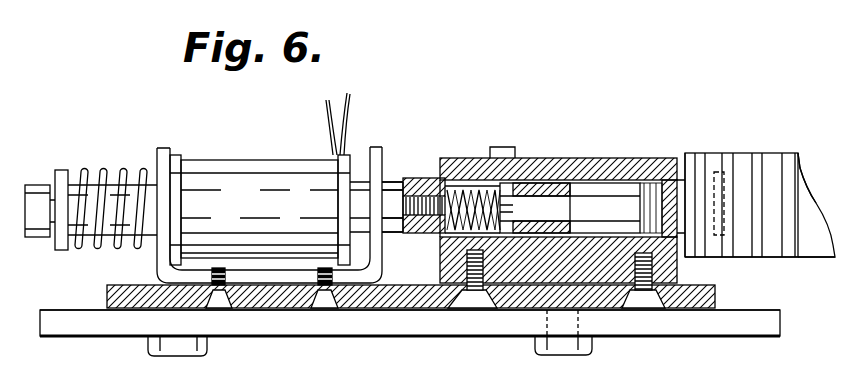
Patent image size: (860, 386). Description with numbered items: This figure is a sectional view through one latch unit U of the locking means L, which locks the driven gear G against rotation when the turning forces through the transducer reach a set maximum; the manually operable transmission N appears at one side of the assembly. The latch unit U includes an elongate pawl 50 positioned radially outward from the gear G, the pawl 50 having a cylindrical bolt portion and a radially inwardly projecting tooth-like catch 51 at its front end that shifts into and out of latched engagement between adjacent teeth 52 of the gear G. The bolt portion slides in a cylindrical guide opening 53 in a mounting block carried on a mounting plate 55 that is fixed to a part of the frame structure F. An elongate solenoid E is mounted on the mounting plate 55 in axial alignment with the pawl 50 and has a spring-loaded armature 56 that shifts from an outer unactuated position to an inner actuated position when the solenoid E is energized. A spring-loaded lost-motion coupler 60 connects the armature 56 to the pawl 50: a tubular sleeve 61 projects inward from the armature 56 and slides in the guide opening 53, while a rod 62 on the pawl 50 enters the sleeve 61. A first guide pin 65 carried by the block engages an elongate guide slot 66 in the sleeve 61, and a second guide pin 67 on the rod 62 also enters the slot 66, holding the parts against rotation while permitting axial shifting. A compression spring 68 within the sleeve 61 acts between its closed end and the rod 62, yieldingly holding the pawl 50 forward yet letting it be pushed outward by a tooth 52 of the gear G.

The pawl 50 is at (655, 158).
The catch 51 is at (697, 153).
The teeth 52 is at (803, 160).
The guide opening 53 is at (632, 158).
The mounting plate 55 is at (292, 310).
The armature 56 is at (396, 178).
The lost-motion coupler 60 is at (418, 183).
The tubular sleeve 61 is at (517, 288).
The rod 62 is at (580, 160).
The first guide pin 65 is at (525, 158).
The guide slot 66 is at (458, 161).
The second guide pin 67 is at (543, 160).
The compression spring 68 is at (441, 252).
The solenoid E is at (250, 156).
The frame structure F is at (245, 333).
The driven gear G is at (778, 152).
The locking means L is at (373, 306).
The transmission N is at (790, 260).
The first latch unit U is at (386, 146).